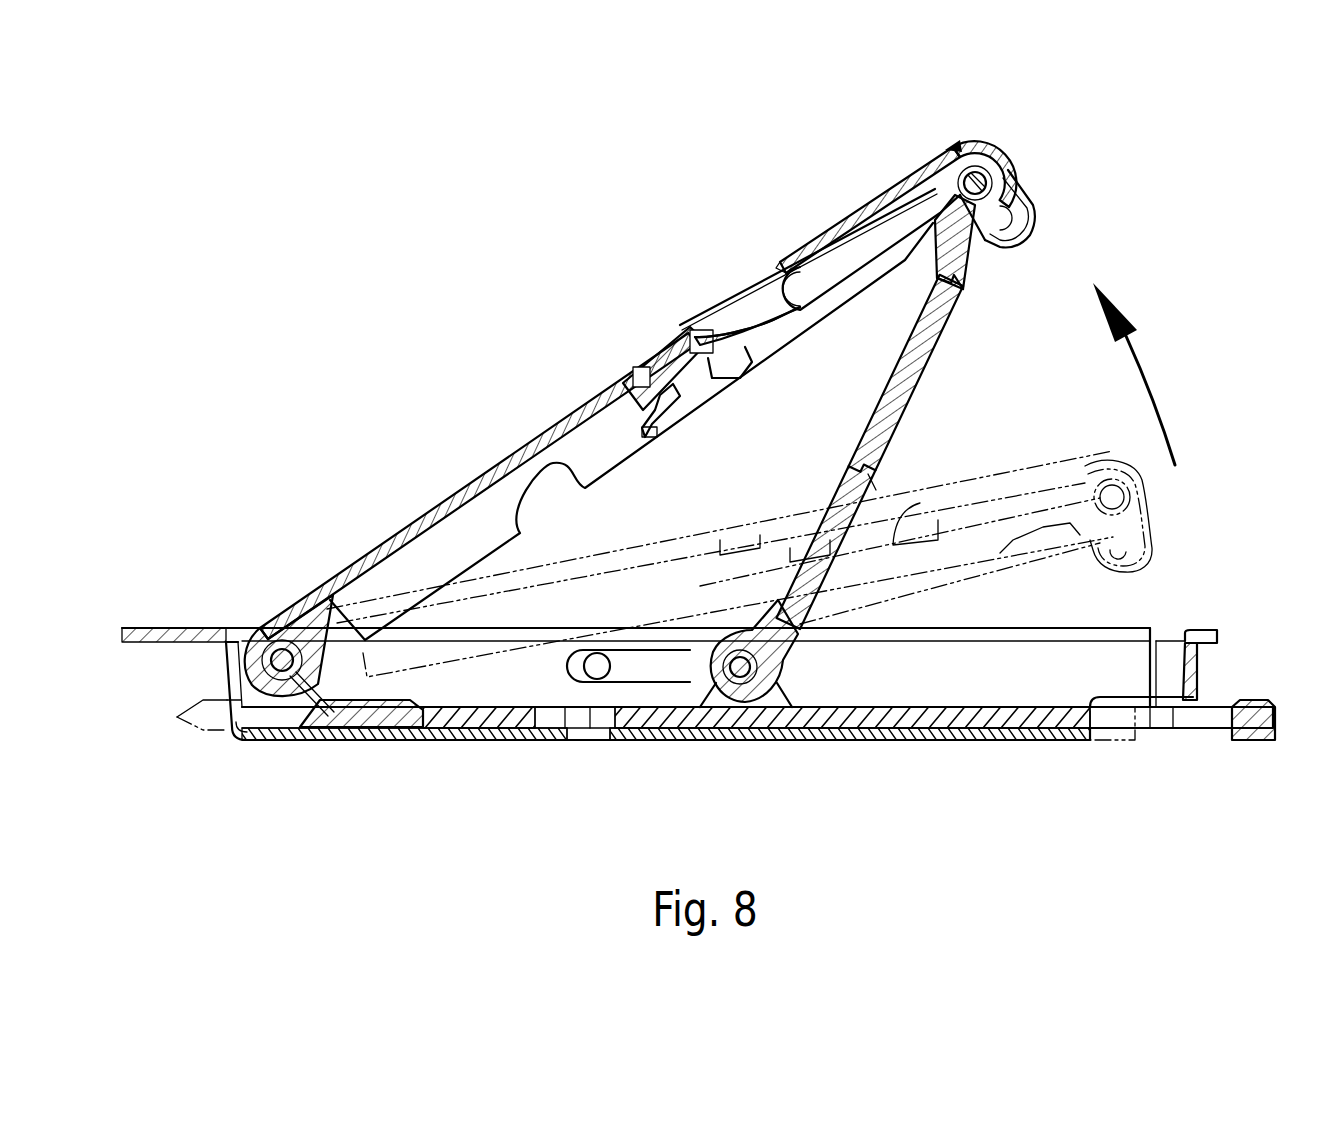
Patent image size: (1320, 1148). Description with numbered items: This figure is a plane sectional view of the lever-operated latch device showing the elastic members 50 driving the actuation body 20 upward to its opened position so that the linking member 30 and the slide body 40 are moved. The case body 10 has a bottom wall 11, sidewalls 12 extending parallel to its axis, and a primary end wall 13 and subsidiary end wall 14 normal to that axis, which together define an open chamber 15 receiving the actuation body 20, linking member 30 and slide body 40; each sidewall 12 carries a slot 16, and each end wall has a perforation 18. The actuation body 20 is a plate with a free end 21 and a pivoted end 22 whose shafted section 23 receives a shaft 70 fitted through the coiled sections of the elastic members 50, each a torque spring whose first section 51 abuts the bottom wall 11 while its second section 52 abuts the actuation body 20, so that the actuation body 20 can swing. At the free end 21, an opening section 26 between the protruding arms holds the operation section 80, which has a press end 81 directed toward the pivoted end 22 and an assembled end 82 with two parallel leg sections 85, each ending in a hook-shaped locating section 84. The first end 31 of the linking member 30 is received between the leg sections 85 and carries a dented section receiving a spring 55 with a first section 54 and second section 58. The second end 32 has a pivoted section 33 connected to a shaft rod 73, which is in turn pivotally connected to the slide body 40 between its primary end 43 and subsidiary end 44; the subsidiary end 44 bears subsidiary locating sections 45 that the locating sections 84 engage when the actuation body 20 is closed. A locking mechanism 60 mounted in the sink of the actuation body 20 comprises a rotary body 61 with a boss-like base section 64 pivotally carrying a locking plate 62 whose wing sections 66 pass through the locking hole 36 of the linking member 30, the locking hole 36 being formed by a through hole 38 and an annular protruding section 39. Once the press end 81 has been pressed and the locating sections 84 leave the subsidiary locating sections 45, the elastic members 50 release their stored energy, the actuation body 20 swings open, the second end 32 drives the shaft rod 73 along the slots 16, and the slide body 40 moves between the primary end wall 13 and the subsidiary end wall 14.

The case body 10 is at (960, 755).
The bottom wall 11 is at (925, 745).
The sidewall 12 is at (1062, 655).
The primary end wall 13 is at (224, 678).
The subsidiary end wall 14 is at (1195, 668).
The open chamber 15 is at (1155, 625).
The slot 16 is at (690, 705).
The perforation 18 is at (230, 742).
The actuation body 20 is at (535, 412).
The free end 21 is at (750, 262).
The pivoted end 22 is at (350, 548).
The shafted section 23 is at (246, 737).
The opening section 26 is at (848, 285).
The linking member 30 is at (943, 372).
The first end 31 is at (1000, 240).
The second end 32 is at (800, 667).
The pivoted section 33 is at (760, 712).
The locking hole 36 is at (880, 478).
The through hole 38 is at (820, 466).
The annular protruding section 39 is at (900, 583).
The slide body 40 is at (885, 750).
The primary end 43 is at (456, 748).
The subsidiary end 44 is at (1185, 750).
The subsidiary locating section 45 is at (1263, 742).
The elastic member 50 is at (262, 625).
The first section 51 is at (322, 722).
The second section 52 is at (318, 608).
The first section 54 is at (970, 258).
The spring 55 is at (962, 140).
The second section 58 is at (945, 150).
The locking mechanism 60 is at (665, 325).
The rotary body 61 is at (640, 362).
The locking plate 62 is at (708, 325).
The base section 64 is at (728, 385).
The wing section 66 is at (668, 425).
The shaft 70 is at (282, 702).
The shaft rod 73 is at (735, 710).
The operation section 80 is at (858, 185).
The press end 81 is at (788, 266).
The assembled end 82 is at (990, 150).
The locating section 84 is at (1045, 232).
The leg section 85 is at (1030, 195).